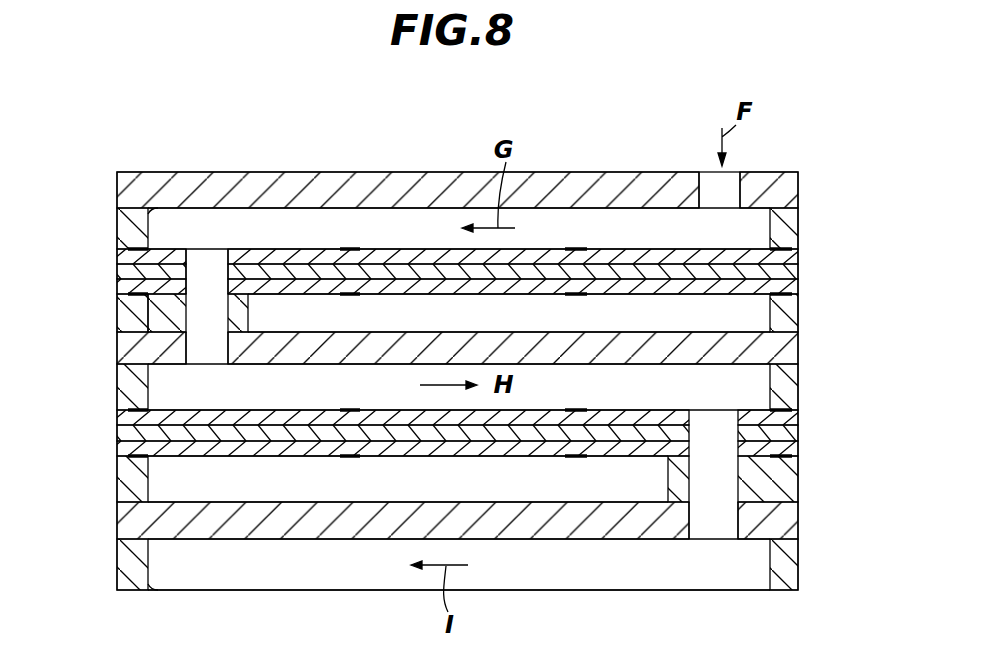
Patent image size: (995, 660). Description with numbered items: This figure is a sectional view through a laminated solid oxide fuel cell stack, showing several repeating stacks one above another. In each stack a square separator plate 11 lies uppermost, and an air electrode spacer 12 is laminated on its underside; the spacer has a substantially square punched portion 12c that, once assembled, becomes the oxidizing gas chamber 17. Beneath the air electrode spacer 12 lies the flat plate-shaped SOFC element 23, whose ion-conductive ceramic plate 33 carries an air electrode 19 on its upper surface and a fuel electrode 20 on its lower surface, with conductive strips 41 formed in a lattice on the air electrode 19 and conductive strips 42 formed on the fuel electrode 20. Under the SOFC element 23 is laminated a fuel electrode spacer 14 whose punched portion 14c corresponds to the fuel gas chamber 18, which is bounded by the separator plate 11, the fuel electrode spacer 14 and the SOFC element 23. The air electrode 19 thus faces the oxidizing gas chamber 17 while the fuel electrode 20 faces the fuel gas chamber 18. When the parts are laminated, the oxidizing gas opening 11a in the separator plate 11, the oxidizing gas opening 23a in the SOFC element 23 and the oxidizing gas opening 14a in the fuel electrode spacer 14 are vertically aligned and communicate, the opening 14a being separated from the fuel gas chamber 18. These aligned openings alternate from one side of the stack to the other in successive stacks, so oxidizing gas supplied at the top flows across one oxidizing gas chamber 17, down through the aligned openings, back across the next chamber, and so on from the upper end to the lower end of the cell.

The separator plate 11 is at (581, 183).
The oxidizing gas opening 11a is at (700, 186).
The air electrode spacer 12 is at (798, 180).
The punched portion 12c is at (151, 214).
The fuel electrode spacer 14 is at (798, 306).
The oxidizing gas opening 14a is at (160, 308).
The punched portion 14c is at (236, 310).
The oxidizing gas chamber 17 is at (459, 399).
The fuel gas chamber 18 is at (459, 398).
The air electrode 19 is at (798, 255).
The fuel electrode 20 is at (798, 287).
The flat plate-shaped SOFC element 23 is at (462, 320).
The oxidizing gas opening 23a is at (196, 270).
The ion-conductive ceramic plate 33 is at (798, 270).
The conductive strips 41 is at (351, 248).
The conductive strips 42 is at (138, 458).